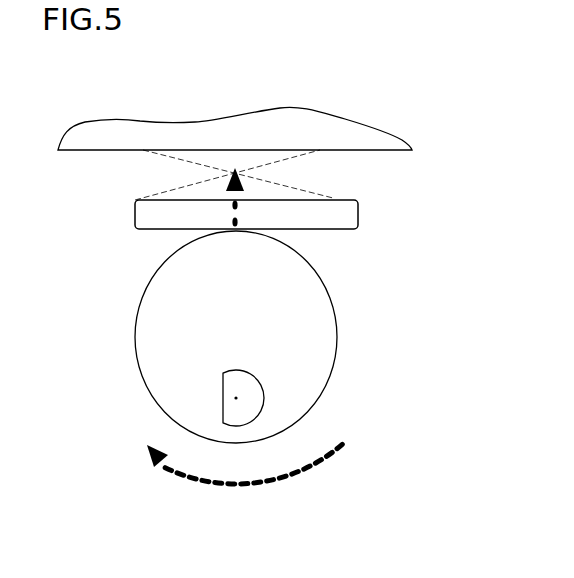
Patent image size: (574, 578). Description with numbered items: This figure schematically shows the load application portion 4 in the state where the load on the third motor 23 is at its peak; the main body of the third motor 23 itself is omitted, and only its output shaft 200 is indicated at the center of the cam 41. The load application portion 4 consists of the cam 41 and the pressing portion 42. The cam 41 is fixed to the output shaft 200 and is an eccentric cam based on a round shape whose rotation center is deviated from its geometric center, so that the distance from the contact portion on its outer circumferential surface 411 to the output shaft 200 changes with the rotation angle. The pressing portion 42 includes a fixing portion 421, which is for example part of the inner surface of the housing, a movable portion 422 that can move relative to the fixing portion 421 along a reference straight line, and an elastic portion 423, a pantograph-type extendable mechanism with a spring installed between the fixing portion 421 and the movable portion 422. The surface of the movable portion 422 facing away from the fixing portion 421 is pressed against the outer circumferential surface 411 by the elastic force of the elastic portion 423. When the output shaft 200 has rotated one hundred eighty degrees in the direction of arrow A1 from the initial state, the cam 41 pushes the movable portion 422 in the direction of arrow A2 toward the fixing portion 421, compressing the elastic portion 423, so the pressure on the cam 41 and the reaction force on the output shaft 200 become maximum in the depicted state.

The load application portion 4 is at (108, 108).
The pressing portion 42 is at (306, 204).
The fixing portion 421 is at (365, 152).
The movable portion 422 is at (358, 225).
The elastic portion 423 is at (305, 153).
The cam 41 is at (225, 342).
The outer circumferential surface 411 is at (337, 351).
The third motor 23 is at (233, 377).
The output shaft 200 is at (232, 400).
The arrow A1 is at (342, 445).
The arrow A2 is at (200, 197).